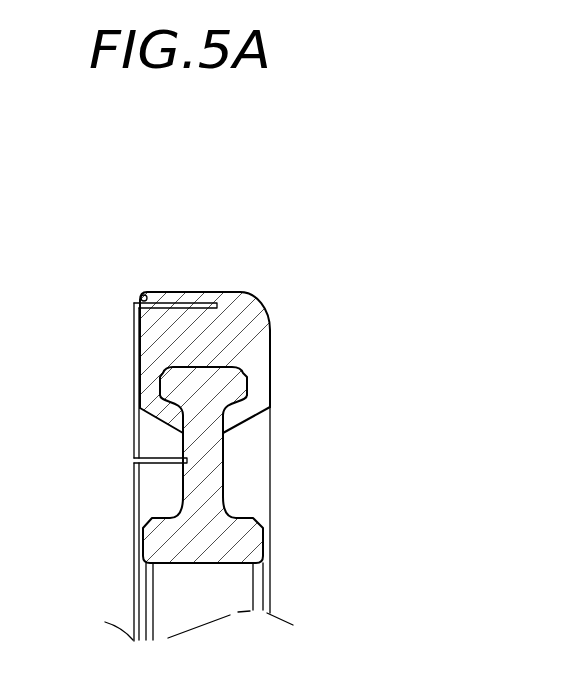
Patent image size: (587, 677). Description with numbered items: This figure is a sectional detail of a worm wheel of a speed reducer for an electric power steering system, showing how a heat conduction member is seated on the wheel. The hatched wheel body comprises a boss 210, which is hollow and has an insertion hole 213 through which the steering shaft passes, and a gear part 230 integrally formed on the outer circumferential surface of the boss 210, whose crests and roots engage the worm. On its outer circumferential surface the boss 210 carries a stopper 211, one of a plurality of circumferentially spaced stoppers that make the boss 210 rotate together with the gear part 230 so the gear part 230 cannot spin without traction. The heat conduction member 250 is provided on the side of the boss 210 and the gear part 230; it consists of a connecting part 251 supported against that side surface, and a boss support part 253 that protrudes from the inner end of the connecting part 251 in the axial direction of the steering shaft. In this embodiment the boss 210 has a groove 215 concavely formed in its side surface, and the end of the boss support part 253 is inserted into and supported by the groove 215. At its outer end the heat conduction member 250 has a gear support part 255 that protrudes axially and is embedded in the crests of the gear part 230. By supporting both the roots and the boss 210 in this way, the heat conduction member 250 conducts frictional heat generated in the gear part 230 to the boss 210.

The boss 210 is at (224, 468).
The stopper 211 is at (201, 367).
The insertion hole 213 is at (207, 564).
The groove 215 is at (188, 462).
The gear part 230 is at (151, 329).
The heat conduction member 250 is at (159, 400).
The connecting part 251 is at (134, 350).
The boss support part 253 is at (153, 464).
The gear support part 255 is at (134, 303).